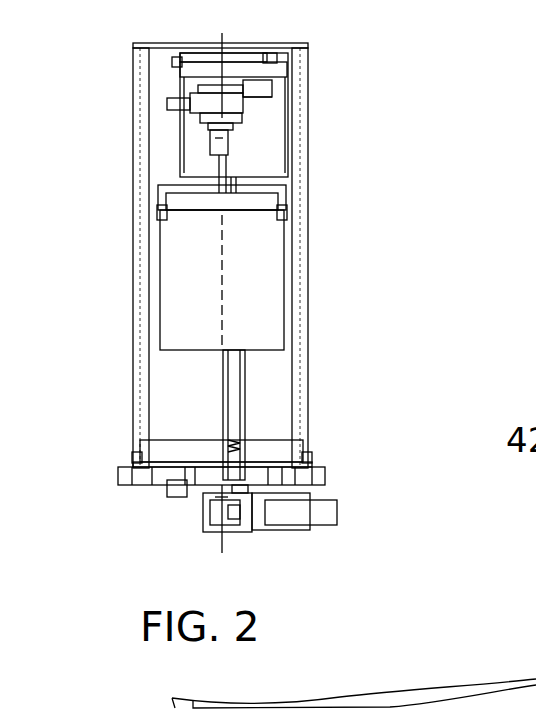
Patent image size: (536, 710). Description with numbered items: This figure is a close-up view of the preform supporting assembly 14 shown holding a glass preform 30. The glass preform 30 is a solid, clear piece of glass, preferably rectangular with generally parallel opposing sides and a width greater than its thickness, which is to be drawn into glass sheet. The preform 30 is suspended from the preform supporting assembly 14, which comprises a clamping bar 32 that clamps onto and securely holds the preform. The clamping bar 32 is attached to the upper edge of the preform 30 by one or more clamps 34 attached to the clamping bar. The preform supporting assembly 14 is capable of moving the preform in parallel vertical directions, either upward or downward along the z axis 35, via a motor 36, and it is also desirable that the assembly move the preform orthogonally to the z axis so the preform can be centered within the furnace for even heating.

The preform supporting assembly 14 is at (322, 97).
The glass preform 30 is at (287, 258).
The clamping bar 32 is at (287, 192).
The clamps 34 is at (160, 218).
The z axis 35 is at (220, 287).
The motor 36 is at (322, 527).